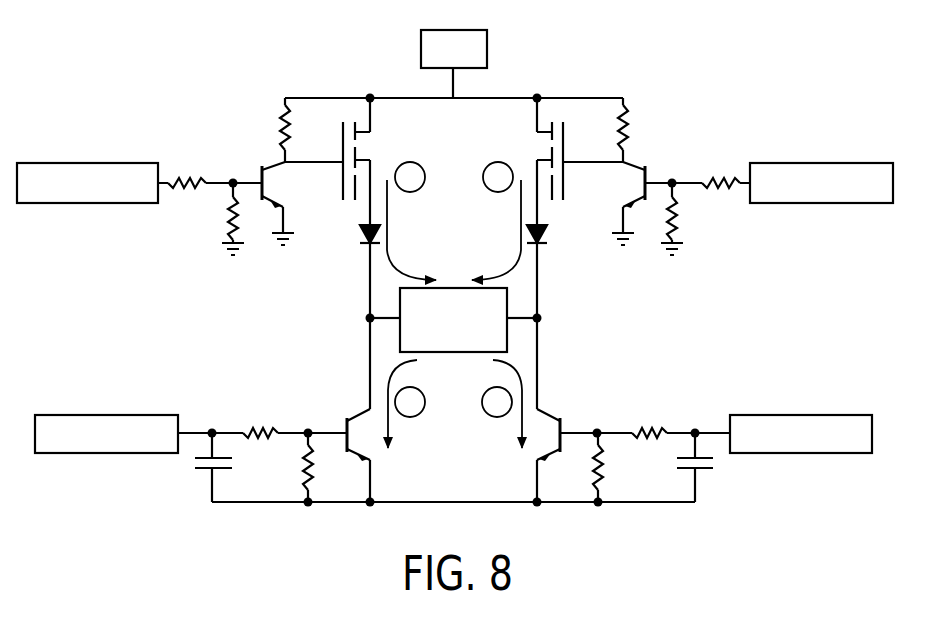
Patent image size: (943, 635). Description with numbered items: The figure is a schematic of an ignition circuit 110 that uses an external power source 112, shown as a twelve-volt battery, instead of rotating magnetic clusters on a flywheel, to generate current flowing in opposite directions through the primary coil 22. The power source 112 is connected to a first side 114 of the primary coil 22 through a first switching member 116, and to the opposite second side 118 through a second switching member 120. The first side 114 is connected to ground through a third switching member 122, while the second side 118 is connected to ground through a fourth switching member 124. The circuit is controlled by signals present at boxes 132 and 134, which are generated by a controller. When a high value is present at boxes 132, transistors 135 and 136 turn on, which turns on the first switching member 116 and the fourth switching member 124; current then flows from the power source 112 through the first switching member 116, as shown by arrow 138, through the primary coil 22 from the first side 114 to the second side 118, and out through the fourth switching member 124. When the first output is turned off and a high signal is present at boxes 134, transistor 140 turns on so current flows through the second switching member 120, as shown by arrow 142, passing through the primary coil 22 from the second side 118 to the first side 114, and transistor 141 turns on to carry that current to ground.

The ignition circuit 110 is at (662, 86).
The power source 112 is at (487, 48).
The first side 114 is at (390, 322).
The first switching member 116 is at (410, 130).
The second side 118 is at (516, 322).
The second switching member 120 is at (520, 148).
The third switching member 122 is at (355, 405).
The fourth switching member 124 is at (552, 403).
The box 132 is at (90, 162).
The box 134 is at (820, 163).
The transistor 135 is at (270, 165).
The transistor 136 is at (565, 420).
The arrow 138 is at (400, 266).
The transistor 140 is at (637, 168).
The transistor 141 is at (347, 420).
The arrow 142 is at (514, 240).
The primary coil 22 is at (452, 352).